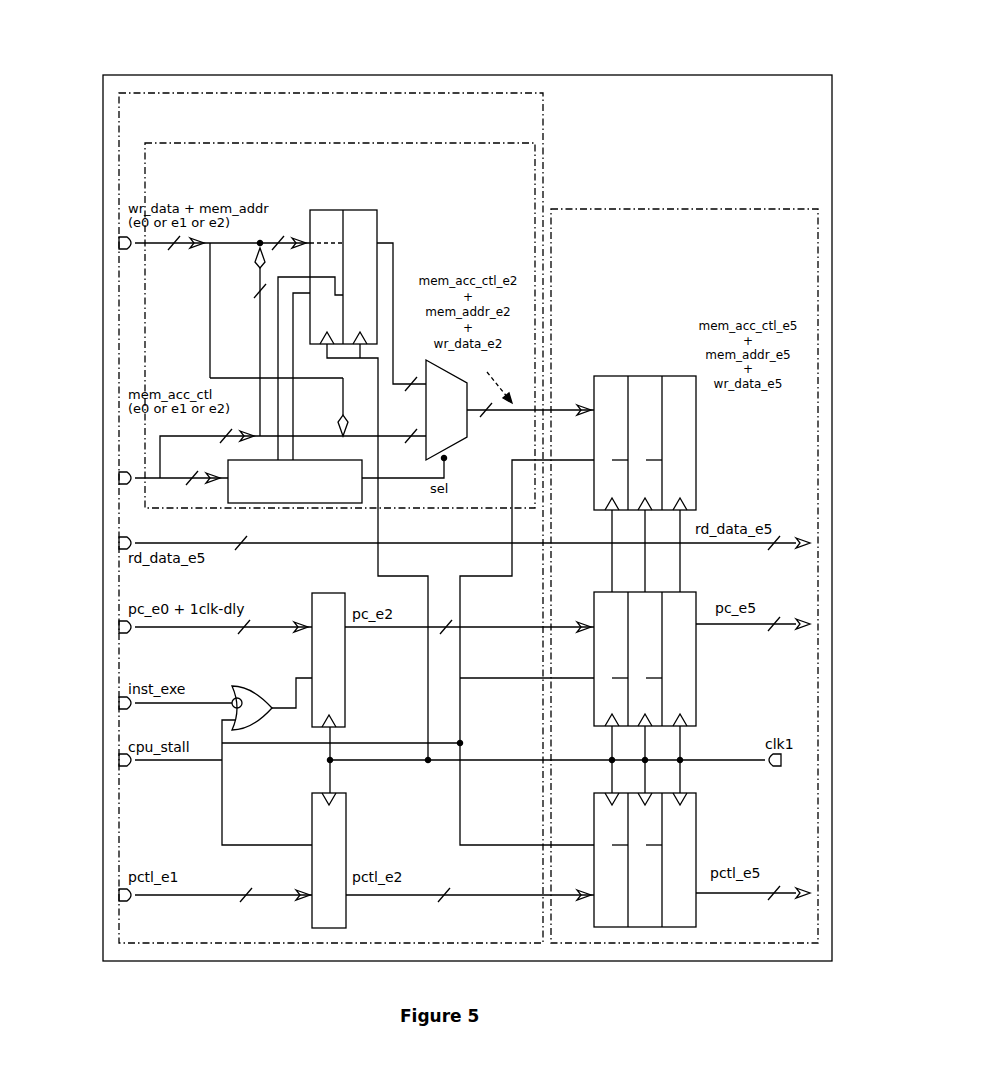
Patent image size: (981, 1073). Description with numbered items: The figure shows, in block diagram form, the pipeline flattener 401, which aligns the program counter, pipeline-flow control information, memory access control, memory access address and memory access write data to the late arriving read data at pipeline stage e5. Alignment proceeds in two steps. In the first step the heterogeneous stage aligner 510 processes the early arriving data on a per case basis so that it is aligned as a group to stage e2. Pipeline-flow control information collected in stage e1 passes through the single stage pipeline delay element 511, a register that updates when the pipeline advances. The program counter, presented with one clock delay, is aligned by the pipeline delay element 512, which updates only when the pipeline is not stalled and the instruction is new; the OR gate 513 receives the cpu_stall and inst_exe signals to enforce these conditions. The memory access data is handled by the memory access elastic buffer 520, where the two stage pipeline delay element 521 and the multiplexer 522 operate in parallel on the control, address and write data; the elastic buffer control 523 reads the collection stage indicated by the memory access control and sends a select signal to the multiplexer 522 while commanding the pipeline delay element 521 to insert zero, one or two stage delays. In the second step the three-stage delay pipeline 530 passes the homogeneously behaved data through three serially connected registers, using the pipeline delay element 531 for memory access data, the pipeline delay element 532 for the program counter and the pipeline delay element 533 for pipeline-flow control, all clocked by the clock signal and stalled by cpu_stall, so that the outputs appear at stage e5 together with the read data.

The pipeline flattener 401 is at (95, 322).
The heterogeneous stage aligner 510 is at (543, 181).
The single stage pipeline delay element 511 is at (346, 850).
The pipeline delay element 512 is at (312, 603).
The OR gate 513 is at (243, 688).
The memory access elastic buffer 520 is at (340, 325).
The two stage pipeline delay element 521 is at (377, 225).
The multiplexer 522 is at (471, 410).
The elastic buffer control 523 is at (248, 509).
The 3-stage delay pipeline 530 is at (700, 209).
The pipeline delay element 531 is at (627, 376).
The pipeline delay element 532 is at (703, 650).
The pipeline delay element 533 is at (703, 850).